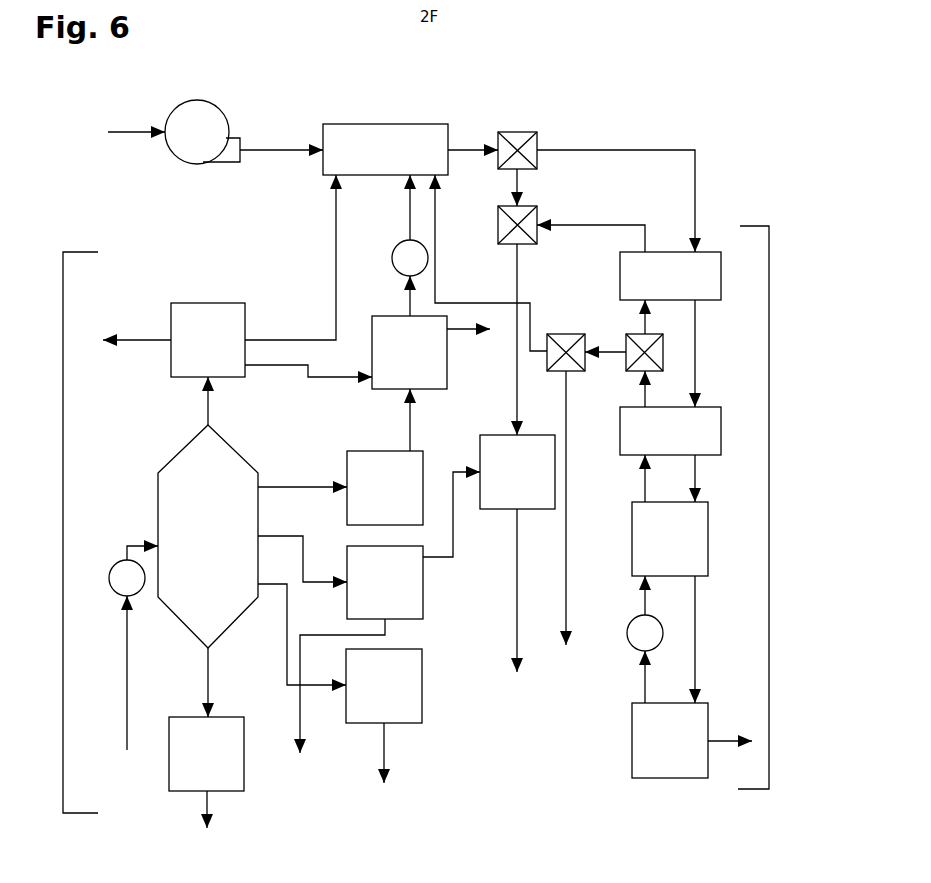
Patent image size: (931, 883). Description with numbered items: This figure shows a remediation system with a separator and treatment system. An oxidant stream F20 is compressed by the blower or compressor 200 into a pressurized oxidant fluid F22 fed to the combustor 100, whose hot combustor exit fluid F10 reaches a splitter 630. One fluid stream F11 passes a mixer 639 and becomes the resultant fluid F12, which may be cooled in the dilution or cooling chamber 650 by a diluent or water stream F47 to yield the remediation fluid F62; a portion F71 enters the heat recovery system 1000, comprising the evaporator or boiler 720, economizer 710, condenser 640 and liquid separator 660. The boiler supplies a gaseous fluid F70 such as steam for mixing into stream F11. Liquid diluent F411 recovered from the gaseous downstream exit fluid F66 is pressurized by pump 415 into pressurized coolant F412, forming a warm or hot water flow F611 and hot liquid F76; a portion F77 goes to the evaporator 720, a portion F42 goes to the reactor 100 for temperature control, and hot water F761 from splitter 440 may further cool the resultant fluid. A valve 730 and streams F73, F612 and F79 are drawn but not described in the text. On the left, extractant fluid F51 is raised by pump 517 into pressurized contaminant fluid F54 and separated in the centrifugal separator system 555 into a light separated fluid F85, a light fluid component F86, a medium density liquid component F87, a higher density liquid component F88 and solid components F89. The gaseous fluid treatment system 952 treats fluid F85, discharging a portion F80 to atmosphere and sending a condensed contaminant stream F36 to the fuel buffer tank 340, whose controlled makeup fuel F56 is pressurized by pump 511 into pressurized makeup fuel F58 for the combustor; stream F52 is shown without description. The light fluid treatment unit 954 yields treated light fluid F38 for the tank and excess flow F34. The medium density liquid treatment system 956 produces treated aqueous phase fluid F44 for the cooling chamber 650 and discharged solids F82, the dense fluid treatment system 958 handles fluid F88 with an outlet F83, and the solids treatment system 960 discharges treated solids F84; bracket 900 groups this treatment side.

The first process section 900 is at (62, 532).
The heat recovery system 1000 is at (771, 506).
The blower or compressor 200 is at (202, 132).
The combustor 100 is at (385, 149).
The splitter 630 is at (530, 132).
The mixer 639 is at (498, 212).
The evaporator or boiler 720 is at (670, 276).
The gaseous fluid treatment system 952 is at (208, 340).
The fuel buffer tank 340 is at (409, 352).
The splitter 440 is at (567, 334).
The valve 730 is at (626, 338).
The economizer 710 is at (670, 431).
The dilution or cooling chamber 650 is at (517, 472).
The light fluid treatment unit 954 is at (385, 488).
The medium density liquid treatment system 956 is at (385, 582).
The dense fluid treatment system 958 is at (384, 686).
The solids treatment system 960 is at (206, 754).
The condenser 640 is at (670, 539).
The liquid separator 660 is at (670, 740).
The centrifugal separator system 555 is at (208, 536).
The pump 511 is at (392, 258).
The pump 517 is at (108, 580).
The pump 415 is at (628, 647).
The oxidant stream F20 is at (125, 131).
The pressurized oxidant fluid F22 is at (280, 149).
The combustor exit fluid F10 is at (482, 149).
The portion of combustor exit fluid F71 is at (608, 149).
The fluid stream from splitter F11 is at (520, 190).
The gaseous fluid F70 is at (603, 225).
The resultant fluid F12 is at (519, 280).
The recycle stream from unit 952 F52 is at (334, 298).
The pressurized makeup fuel F58 is at (408, 208).
The controlled makeup fuel F56 is at (408, 303).
The portion of hot water F42 is at (437, 262).
The hot water from splitter F761 is at (610, 355).
The portion of hot water F77 is at (647, 318).
The stream to unit 710 F73 is at (698, 348).
The hot liquid F76 is at (640, 396).
The diluent or water stream F47 is at (568, 522).
The remediation fluid F62 is at (515, 604).
The warm or hot water flow F611 is at (640, 478).
The stream to unit 640 F612 is at (698, 486).
The pressurized coolant F412 is at (640, 594).
The liquid diluent F411 is at (640, 676).
The gaseous downstream exit fluid F66 is at (698, 642).
The product stream F79 is at (730, 740).
The discharge portion F80 is at (148, 338).
The condensed contaminant stream F36 is at (330, 380).
The excess treated hydrocarbons flow F34 is at (460, 332).
The treated light fluid F38 is at (408, 398).
The light separated fluid F85 is at (210, 397).
The pressurized contaminant fluid F54 is at (123, 545).
The extractant fluid F51 is at (125, 645).
The light fluid component F86 is at (302, 486).
The medium density liquid component F87 is at (304, 556).
The higher density liquid component F88 is at (285, 660).
The treated aqueous phase fluid F44 is at (455, 556).
The discharged solids F82 is at (298, 720).
The product stream from unit 958 F83 is at (386, 765).
The solid components F89 is at (210, 665).
The separated and treated solids F84 is at (212, 805).